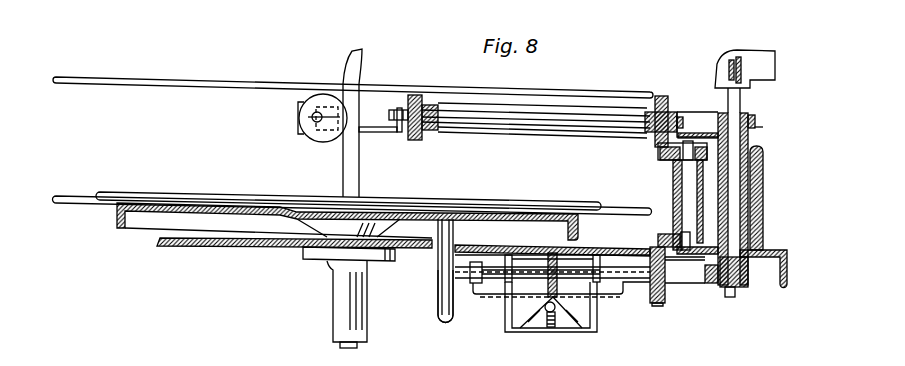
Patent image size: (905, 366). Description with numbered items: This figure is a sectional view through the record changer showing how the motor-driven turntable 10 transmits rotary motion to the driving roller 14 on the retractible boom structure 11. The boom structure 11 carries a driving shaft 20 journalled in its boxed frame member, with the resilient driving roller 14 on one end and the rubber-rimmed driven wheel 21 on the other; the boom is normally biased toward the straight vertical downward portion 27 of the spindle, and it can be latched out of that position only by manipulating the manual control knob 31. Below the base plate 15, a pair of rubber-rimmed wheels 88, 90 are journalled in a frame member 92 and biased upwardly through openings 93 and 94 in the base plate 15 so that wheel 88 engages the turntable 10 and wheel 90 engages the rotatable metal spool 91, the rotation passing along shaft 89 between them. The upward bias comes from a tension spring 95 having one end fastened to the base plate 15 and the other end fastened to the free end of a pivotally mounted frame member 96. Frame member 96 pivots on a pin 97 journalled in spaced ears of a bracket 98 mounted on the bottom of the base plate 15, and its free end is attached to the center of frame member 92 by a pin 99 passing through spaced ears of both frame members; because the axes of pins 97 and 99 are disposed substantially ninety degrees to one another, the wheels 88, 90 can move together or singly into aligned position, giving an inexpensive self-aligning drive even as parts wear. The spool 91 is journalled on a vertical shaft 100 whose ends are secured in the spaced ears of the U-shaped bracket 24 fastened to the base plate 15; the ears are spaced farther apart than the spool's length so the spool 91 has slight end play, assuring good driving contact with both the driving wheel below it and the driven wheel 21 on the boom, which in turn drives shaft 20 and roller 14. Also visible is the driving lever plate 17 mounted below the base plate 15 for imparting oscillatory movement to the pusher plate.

The turntable 10 is at (579, 229).
The boom structure 11 is at (577, 132).
The driving roller 14 is at (421, 140).
The base plate 15 is at (205, 247).
The driving lever plate 17 is at (756, 290).
The driving shaft 20 is at (499, 129).
The driven wheel 21 is at (669, 102).
The U-shaped bracket 24 is at (763, 190).
The vertical downward portion of spindle 27 is at (356, 166).
The manual control knob 31 is at (745, 50).
The wheel 88 is at (447, 322).
The shaft 89 is at (665, 292).
The wheel 90 is at (660, 306).
The spool 91 is at (664, 236).
The frame member 92 is at (613, 302).
The opening 93 is at (436, 250).
The opening 94 is at (669, 259).
The tension spring 95 is at (543, 252).
The frame member 96 is at (528, 333).
The pin 97 is at (497, 262).
The bracket 98 is at (600, 254).
The pin 99 is at (557, 327).
The vertical shaft 100 is at (673, 186).